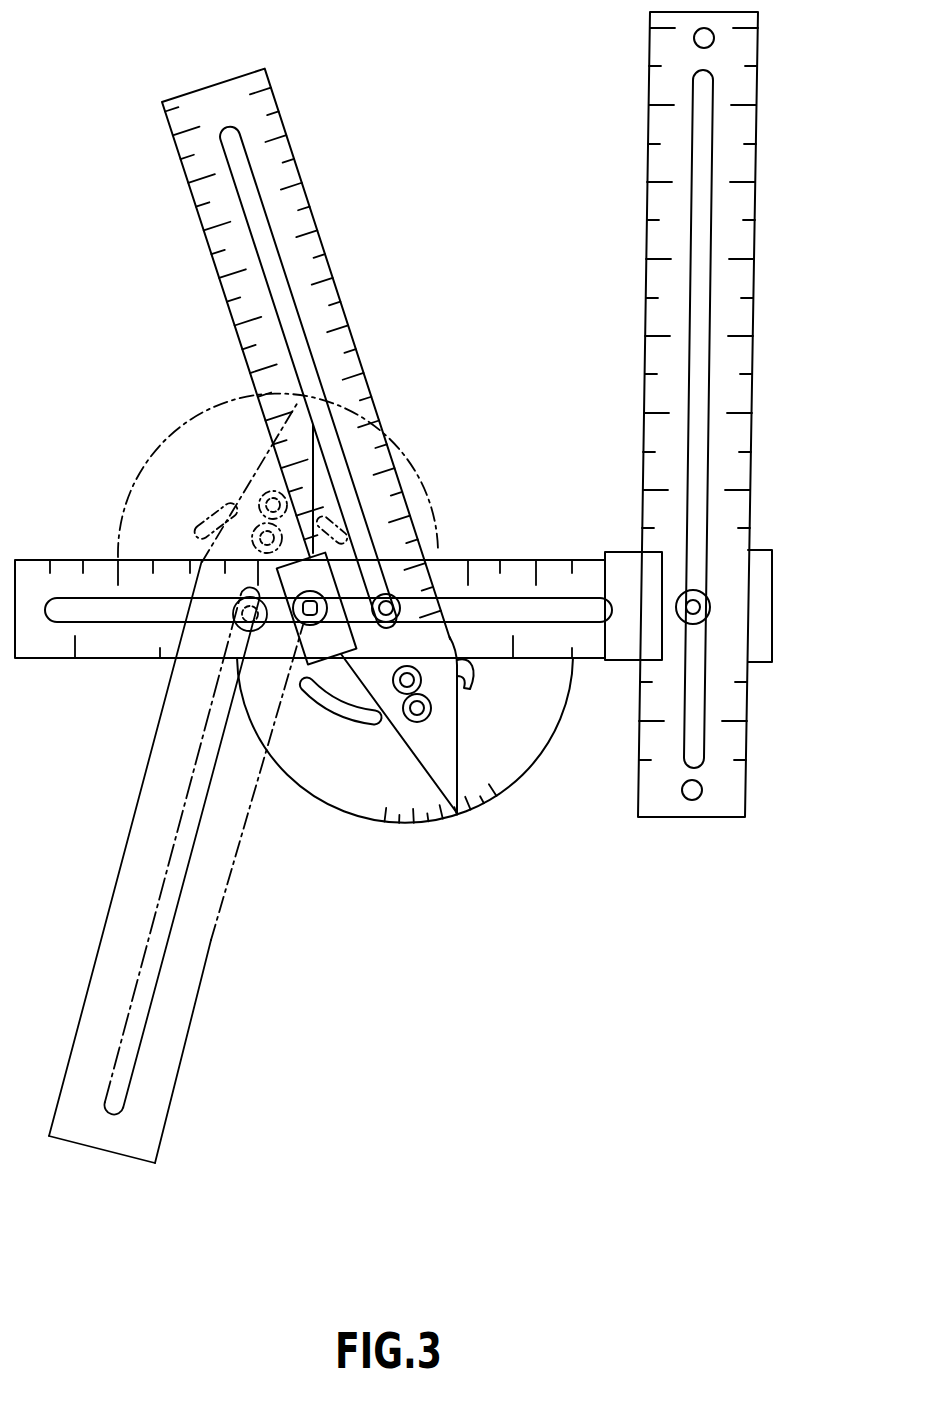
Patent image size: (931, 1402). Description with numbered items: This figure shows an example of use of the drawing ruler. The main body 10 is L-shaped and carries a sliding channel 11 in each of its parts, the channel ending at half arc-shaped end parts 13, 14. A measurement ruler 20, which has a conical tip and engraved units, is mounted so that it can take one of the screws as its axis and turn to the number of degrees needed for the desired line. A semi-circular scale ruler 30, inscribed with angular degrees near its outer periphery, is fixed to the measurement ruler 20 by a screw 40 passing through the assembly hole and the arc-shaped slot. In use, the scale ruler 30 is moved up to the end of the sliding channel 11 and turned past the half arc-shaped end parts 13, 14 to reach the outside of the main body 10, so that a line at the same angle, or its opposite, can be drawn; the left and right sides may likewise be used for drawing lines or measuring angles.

The main body 10 is at (656, 45).
The sliding channel 11 is at (698, 420).
The half arc-shaped end part 13 is at (592, 598).
The half arc-shaped end part 14 is at (63, 603).
The measurement ruler 20 is at (270, 123).
The scale ruler 30 is at (508, 753).
The screw 40 is at (415, 720).